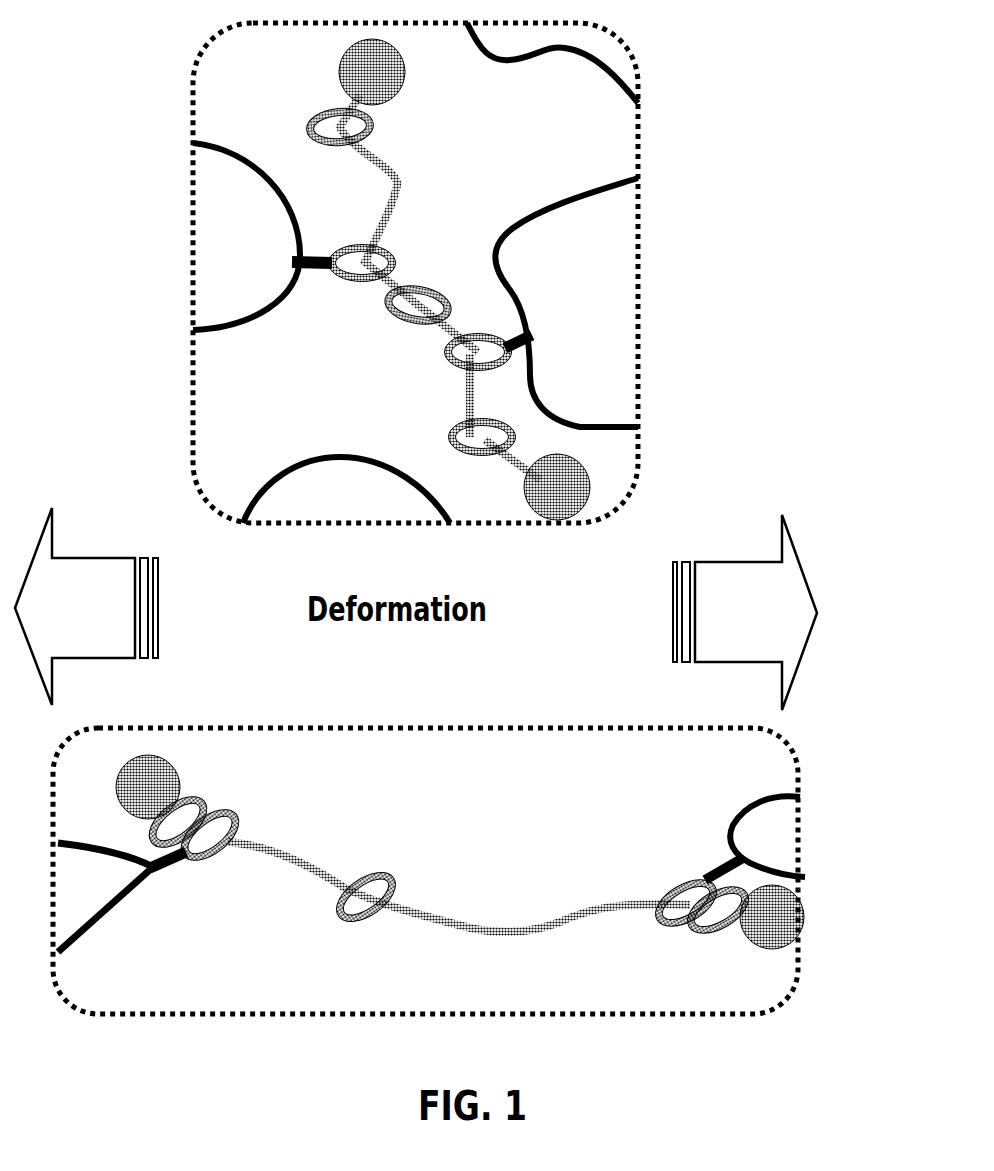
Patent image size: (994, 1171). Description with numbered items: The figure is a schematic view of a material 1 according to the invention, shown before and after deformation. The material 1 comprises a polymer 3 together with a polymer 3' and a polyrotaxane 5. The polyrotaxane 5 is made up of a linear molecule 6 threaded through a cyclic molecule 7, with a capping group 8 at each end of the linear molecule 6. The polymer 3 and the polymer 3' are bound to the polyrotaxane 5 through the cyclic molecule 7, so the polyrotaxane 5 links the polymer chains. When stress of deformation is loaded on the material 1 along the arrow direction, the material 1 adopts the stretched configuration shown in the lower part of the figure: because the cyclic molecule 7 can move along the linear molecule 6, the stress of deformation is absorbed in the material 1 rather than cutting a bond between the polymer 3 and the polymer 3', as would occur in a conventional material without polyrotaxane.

The material 1 is at (663, 152).
The polymer 3 is at (348, 487).
The polymer 3' is at (650, 518).
The polyrotaxane 5 is at (413, 158).
The linear molecule 6 is at (400, 190).
The cyclic molecule 7 is at (312, 122).
The capping group 8 is at (398, 66).